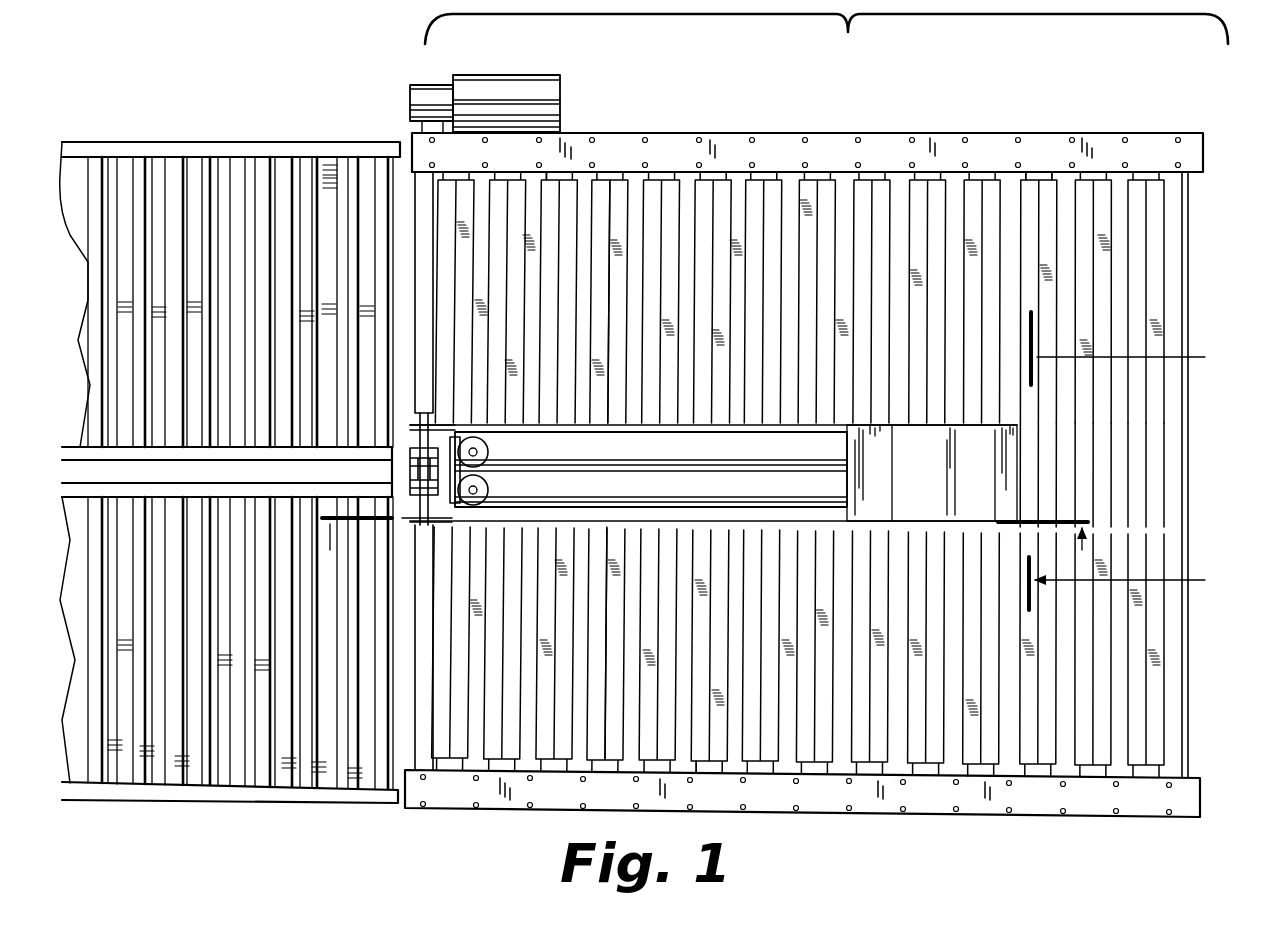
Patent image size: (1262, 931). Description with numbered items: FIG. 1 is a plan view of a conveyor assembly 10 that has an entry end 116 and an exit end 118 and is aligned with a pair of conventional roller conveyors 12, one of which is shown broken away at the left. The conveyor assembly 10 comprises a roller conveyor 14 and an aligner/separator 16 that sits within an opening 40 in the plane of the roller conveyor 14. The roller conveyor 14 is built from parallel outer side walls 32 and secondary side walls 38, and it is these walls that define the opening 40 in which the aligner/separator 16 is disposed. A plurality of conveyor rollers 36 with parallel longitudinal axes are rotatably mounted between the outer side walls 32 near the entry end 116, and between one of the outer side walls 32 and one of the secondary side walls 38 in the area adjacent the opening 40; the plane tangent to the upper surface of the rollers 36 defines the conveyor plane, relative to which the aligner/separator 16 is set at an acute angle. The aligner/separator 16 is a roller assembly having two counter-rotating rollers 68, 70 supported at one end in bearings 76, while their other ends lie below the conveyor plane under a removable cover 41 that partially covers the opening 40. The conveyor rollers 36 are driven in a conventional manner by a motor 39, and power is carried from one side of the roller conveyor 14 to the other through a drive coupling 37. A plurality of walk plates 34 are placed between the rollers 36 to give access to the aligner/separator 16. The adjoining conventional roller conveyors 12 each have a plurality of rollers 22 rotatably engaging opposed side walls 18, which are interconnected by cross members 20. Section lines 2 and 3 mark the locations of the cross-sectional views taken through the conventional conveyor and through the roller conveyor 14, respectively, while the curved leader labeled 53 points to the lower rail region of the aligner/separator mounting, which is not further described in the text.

The conveyor assembly 10 is at (826, 39).
The roller conveyor 12 is at (282, 118).
The roller conveyor 14 is at (823, 477).
The aligner/separator 16 is at (651, 325).
The side walls 18 is at (380, 143).
The cross members 20 is at (202, 190).
The rollers 22 is at (187, 163).
The outer side walls 32 is at (1128, 134).
The walk plates 34 is at (708, 200).
The conveyor rollers 36 is at (543, 183).
The drive coupling 37 is at (413, 440).
The secondary side walls 38 is at (642, 360).
The motor 39 is at (540, 76).
The opening 40 is at (770, 428).
The removable cover 41 is at (922, 452).
The lower guide rail 53 is at (990, 500).
The counter-rotating roller 68 is at (652, 498).
The counter-rotating roller 70 is at (648, 458).
The bearings 76 is at (470, 442).
The entry end 116 is at (1190, 445).
The exit end 118 is at (436, 705).
The section line 2 is at (703, 558).
The section line 3 is at (1126, 461).